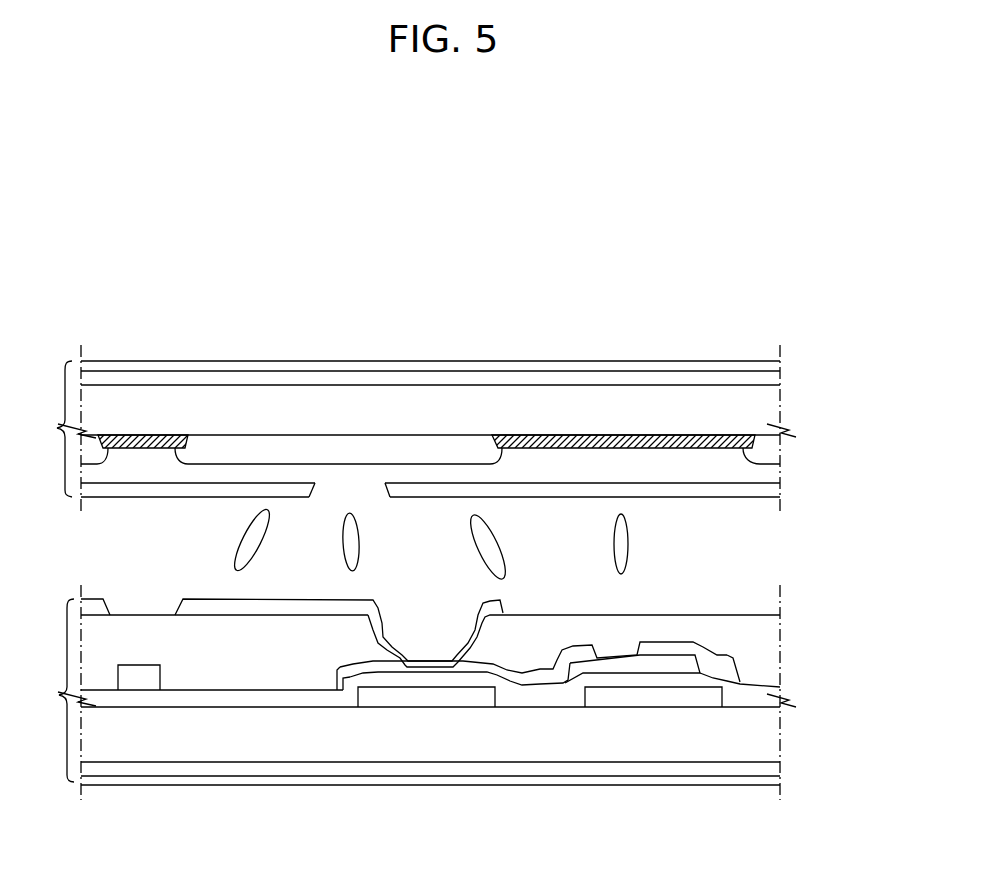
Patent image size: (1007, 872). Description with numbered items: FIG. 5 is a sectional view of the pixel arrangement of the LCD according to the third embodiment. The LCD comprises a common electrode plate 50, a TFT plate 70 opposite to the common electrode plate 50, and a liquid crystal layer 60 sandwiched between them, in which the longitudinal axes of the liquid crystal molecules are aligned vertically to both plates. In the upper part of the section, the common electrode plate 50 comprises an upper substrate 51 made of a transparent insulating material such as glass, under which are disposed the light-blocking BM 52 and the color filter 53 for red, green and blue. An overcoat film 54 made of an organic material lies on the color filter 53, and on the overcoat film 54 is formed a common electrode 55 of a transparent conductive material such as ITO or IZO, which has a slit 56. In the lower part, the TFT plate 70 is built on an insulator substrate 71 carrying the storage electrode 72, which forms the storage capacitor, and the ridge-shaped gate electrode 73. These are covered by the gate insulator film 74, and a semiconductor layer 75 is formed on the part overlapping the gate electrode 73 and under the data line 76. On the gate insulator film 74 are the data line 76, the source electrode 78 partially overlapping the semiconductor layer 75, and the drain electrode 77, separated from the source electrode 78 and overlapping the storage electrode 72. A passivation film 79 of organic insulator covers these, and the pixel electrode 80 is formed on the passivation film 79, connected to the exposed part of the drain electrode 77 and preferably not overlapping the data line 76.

The common electrode plate 50 is at (403, 429).
The upper substrate 51 is at (770, 410).
The BM 52 is at (146, 436).
The color filter 53 is at (343, 452).
The overcoat film 54 is at (770, 477).
The common electrode 55 is at (770, 495).
The slit 56 is at (333, 506).
The liquid crystal layer 60 is at (92, 552).
The TFT plate 70 is at (403, 692).
The insulator substrate 71 is at (770, 745).
The storage electrode 72 is at (432, 704).
The gate electrode 73 is at (652, 704).
The gate insulator film 74 is at (197, 701).
The semiconductor layer 75 is at (773, 683).
The data line 76 is at (138, 683).
The drain electrode 77 is at (338, 674).
The source electrode 78 is at (727, 654).
The passivation film 79 is at (358, 633).
The pixel electrode 80 is at (183, 604).